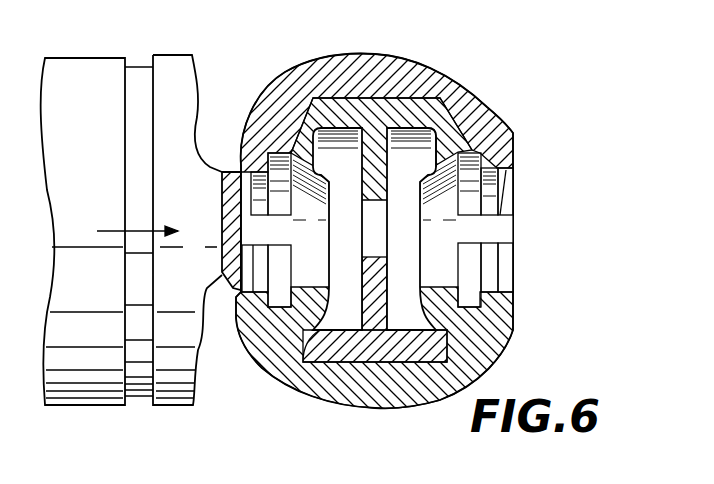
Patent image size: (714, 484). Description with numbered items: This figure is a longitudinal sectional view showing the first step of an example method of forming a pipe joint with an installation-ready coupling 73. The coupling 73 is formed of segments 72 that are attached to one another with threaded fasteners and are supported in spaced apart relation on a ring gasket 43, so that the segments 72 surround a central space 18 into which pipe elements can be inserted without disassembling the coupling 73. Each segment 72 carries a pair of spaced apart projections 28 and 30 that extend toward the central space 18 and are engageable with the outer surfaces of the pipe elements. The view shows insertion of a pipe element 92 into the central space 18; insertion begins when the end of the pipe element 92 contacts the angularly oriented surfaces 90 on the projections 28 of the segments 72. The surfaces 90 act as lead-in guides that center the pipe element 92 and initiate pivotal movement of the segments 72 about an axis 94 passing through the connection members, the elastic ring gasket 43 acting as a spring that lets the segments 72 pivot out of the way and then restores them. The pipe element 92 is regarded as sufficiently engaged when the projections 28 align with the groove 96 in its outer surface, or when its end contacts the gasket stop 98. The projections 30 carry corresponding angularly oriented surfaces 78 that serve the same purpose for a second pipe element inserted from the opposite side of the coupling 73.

The central space 18 is at (378, 243).
The projection 28 is at (264, 165).
The projection 30 is at (497, 163).
The ring gasket 43 is at (393, 163).
The segment 72 is at (363, 57).
The coupling 73 is at (411, 226).
The angularly oriented surface 78 is at (503, 192).
The angularly oriented surface 90 is at (238, 176).
The pipe element 92 is at (170, 58).
The axis 94 is at (373, 228).
The groove 96 is at (143, 58).
The gasket stop 98 is at (405, 105).